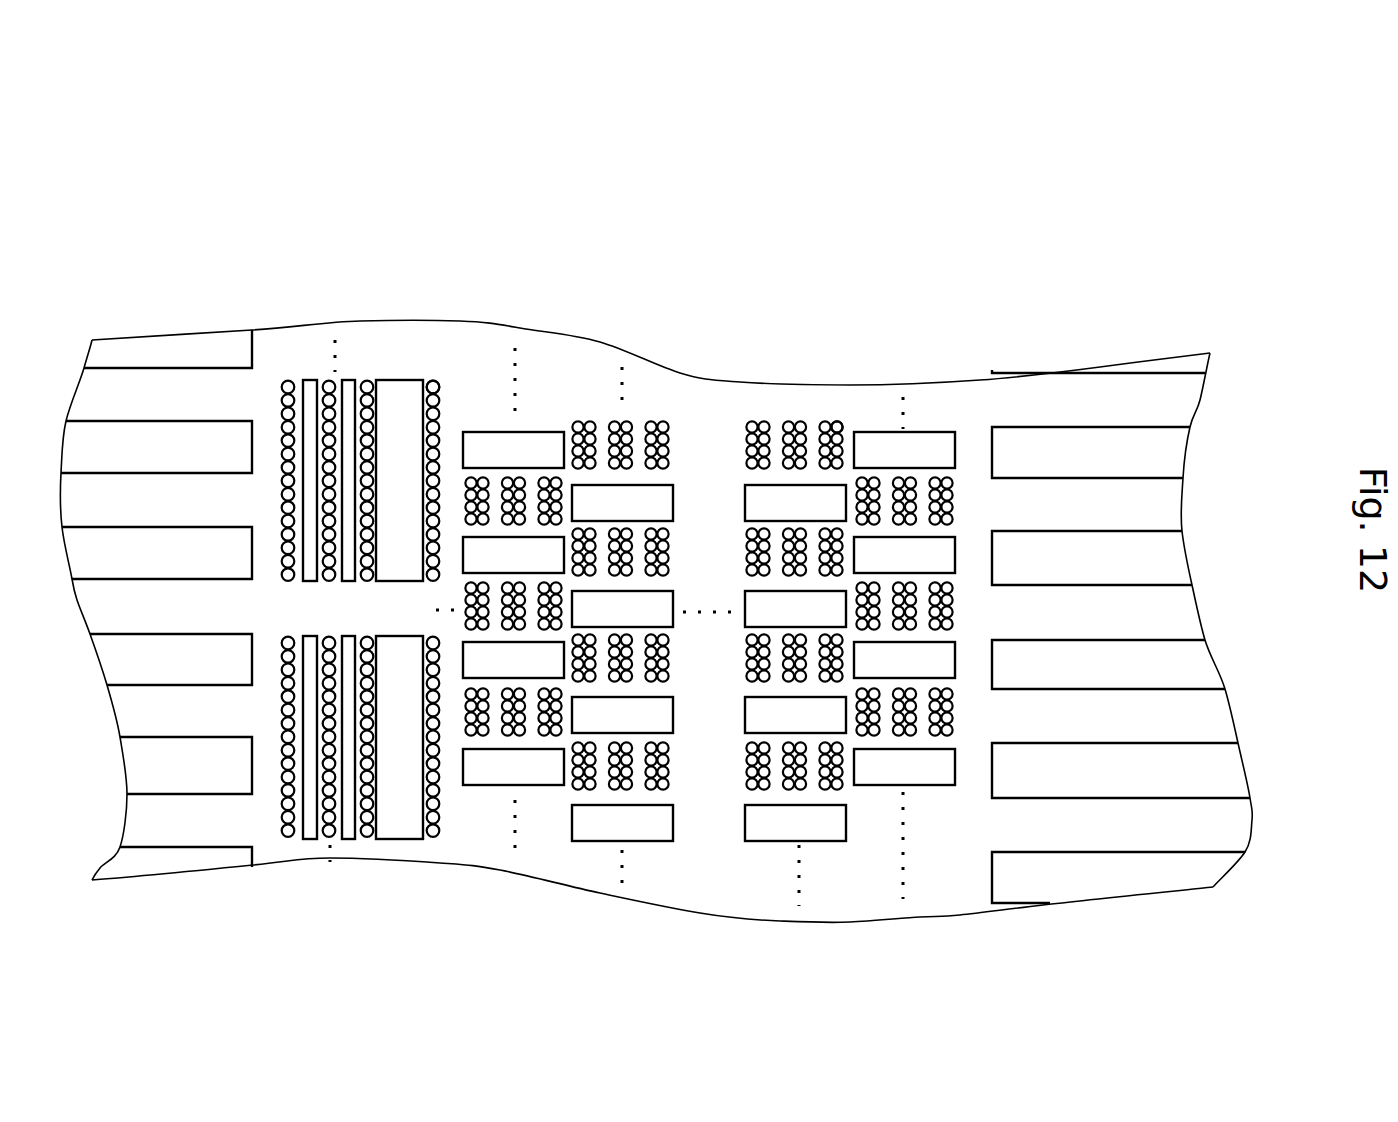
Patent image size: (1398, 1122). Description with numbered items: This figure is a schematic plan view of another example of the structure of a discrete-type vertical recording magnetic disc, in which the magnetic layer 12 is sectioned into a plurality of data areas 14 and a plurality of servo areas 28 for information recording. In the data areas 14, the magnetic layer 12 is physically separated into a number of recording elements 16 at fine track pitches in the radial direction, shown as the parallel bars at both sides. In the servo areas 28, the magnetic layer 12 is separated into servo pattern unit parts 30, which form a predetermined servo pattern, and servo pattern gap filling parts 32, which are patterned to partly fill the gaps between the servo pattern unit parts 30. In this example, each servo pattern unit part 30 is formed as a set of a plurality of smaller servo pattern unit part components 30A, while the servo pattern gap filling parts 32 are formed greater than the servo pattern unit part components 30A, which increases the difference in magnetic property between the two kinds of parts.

The magnetic layer 12 is at (702, 108).
The data areas 14 is at (257, 214).
The recording elements 16 is at (1168, 452).
The servo areas 28 is at (975, 214).
The servo pattern unit parts 30 is at (366, 372).
The servo pattern unit part components 30A is at (439, 434).
The servo pattern gap filling parts 32 is at (388, 380).